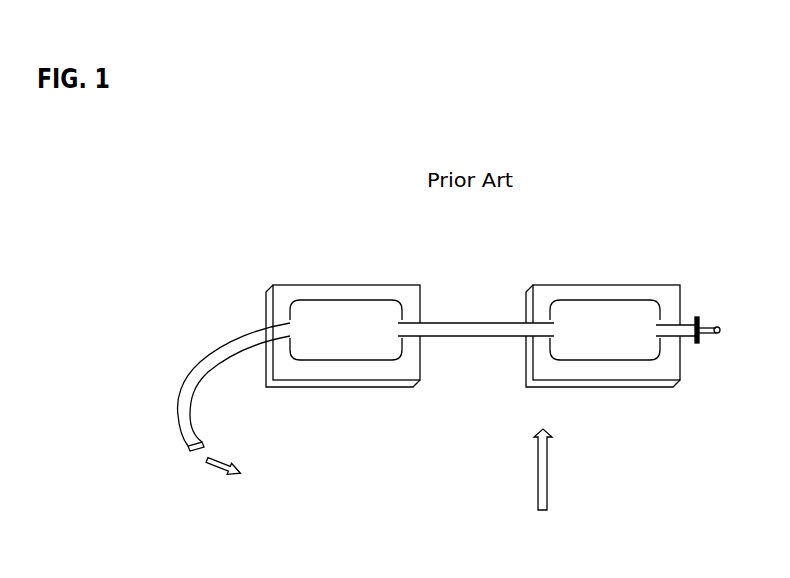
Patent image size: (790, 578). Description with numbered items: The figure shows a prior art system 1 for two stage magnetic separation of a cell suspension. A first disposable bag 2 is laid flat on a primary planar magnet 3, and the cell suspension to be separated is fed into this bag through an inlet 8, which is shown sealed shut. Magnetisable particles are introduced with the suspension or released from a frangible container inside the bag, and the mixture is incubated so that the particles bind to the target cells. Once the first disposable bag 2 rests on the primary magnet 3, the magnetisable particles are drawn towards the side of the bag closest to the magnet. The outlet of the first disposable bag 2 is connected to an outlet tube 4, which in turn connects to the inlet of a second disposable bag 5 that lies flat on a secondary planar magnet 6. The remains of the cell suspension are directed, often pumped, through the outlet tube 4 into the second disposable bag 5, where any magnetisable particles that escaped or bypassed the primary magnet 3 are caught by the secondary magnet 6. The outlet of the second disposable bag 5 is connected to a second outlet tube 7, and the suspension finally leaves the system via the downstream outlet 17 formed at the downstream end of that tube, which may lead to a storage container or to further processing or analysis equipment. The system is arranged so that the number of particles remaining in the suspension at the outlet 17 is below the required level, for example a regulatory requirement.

The prior art system 1 is at (543, 488).
The first disposable bag 2 is at (602, 328).
The primary planar magnet 3 is at (665, 370).
The outlet tube 4 is at (472, 327).
The second disposable bag 5 is at (407, 325).
The secondary planar magnet 6 is at (287, 297).
The second outlet tube 7 is at (202, 378).
The inlet 8 is at (705, 328).
The downstream outlet 17 is at (239, 477).